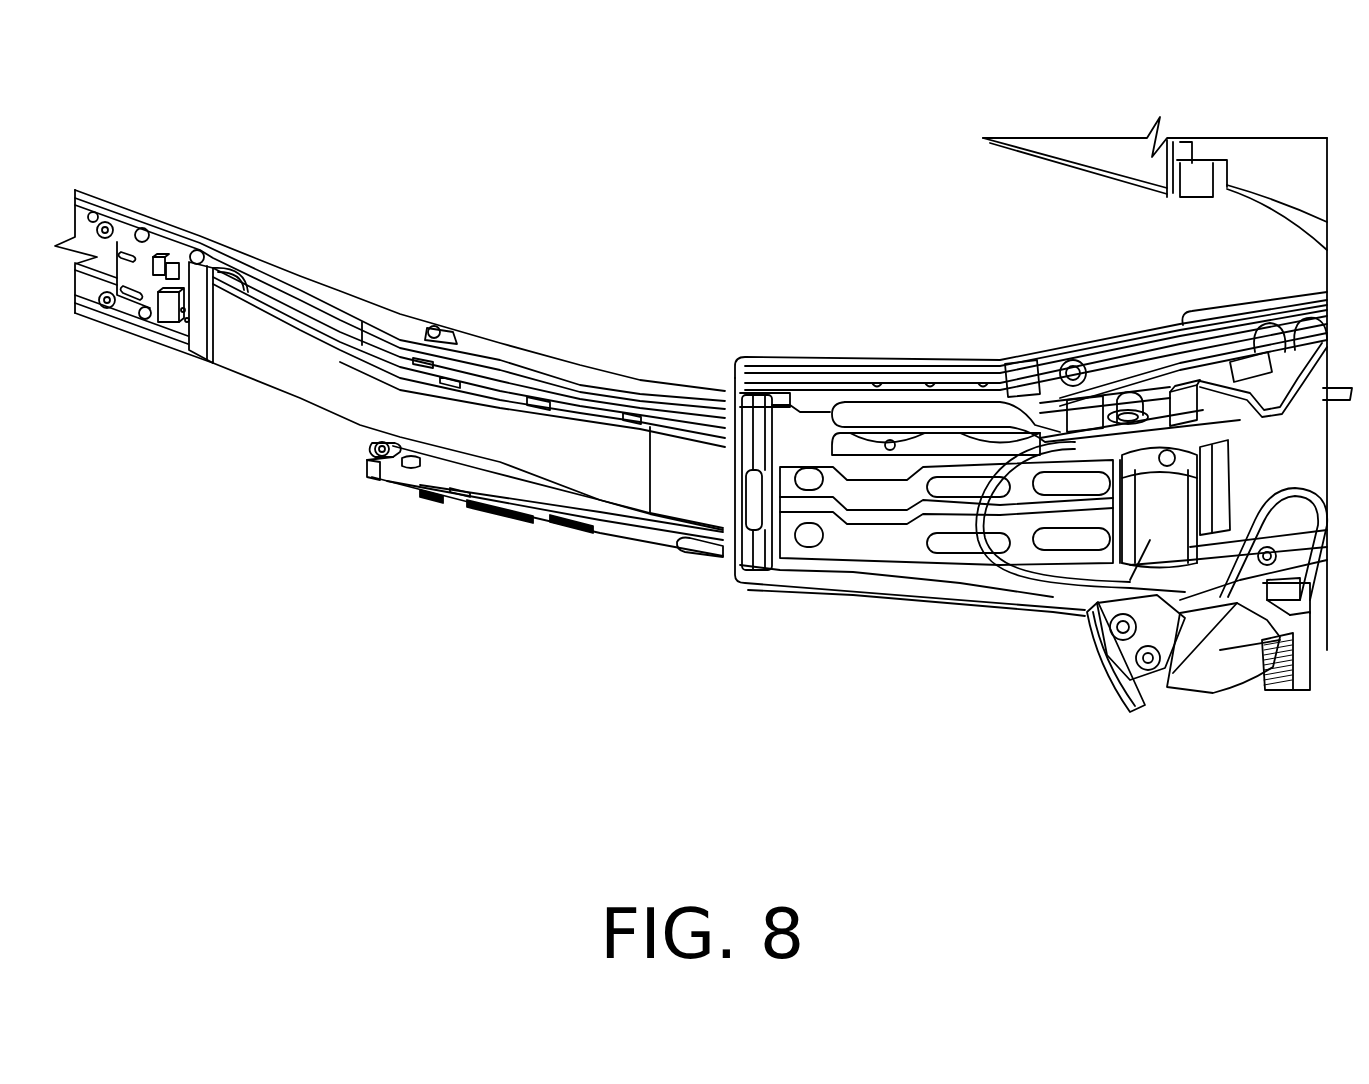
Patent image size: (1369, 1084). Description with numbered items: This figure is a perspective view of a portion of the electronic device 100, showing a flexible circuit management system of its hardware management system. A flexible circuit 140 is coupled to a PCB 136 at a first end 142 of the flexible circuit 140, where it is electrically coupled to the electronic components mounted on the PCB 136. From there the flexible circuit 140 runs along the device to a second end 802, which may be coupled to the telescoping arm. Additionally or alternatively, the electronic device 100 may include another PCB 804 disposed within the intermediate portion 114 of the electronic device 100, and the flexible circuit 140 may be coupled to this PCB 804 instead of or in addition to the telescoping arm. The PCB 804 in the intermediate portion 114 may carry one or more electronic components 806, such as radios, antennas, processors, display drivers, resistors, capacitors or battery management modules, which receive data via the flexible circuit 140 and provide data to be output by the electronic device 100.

The electronic device 100 is at (1243, 81).
The intermediate portion 114 is at (233, 258).
The PCB 136 is at (1298, 420).
The flexible circuit 140 is at (1097, 623).
The first end 142 is at (1224, 480).
The second end 802 is at (202, 349).
The PCB 804 is at (160, 250).
The electronic components 806 is at (170, 300).